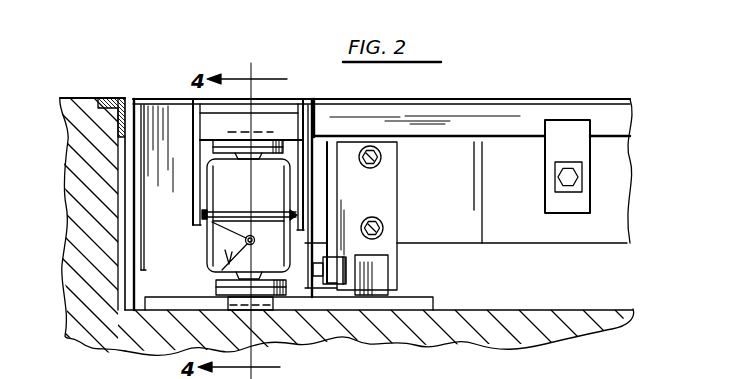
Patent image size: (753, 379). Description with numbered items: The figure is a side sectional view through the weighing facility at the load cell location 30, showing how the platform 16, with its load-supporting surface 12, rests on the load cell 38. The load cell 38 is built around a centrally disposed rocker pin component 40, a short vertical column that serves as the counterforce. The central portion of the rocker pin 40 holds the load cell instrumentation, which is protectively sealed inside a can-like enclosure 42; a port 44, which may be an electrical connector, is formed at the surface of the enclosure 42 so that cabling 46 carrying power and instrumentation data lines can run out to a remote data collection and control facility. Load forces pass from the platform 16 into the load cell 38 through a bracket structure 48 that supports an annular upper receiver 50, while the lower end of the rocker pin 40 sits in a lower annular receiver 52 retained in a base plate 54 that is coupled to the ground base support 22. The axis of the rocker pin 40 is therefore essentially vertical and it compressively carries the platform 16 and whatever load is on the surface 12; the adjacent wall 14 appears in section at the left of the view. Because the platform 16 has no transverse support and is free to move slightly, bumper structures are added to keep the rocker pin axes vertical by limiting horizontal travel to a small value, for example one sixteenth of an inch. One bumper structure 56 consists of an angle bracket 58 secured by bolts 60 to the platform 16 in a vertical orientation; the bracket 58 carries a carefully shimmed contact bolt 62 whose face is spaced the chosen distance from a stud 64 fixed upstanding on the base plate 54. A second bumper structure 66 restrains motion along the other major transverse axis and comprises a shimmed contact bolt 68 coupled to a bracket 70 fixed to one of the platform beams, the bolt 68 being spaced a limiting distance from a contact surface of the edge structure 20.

The surface 12 is at (606, 99).
The cabinet side wall 14 is at (70, 97).
The platform 16 is at (643, 148).
The edge structure 20 is at (112, 97).
The ground base support 22 is at (512, 309).
The load cell location 30 is at (260, 62).
The load cell 38 is at (204, 254).
The rocker pin component 40 is at (270, 156).
The can-like enclosure 42 is at (283, 262).
The port 44 is at (206, 218).
The cabling 46 is at (245, 240).
The bracket structure 48 is at (193, 132).
The annular upper receiver 50 is at (265, 133).
The lower annularly shaped receiver 52 is at (205, 334).
The base plate 54 is at (436, 302).
The bumper structure 56 is at (412, 144).
The angle bracket 58 is at (390, 155).
The bolts 60 is at (373, 161).
The contact bolt 62 is at (350, 277).
The stud 64 is at (378, 266).
The bumper structure 66 is at (557, 97).
The contact bolt 68 is at (577, 178).
The bracket 70 is at (575, 138).